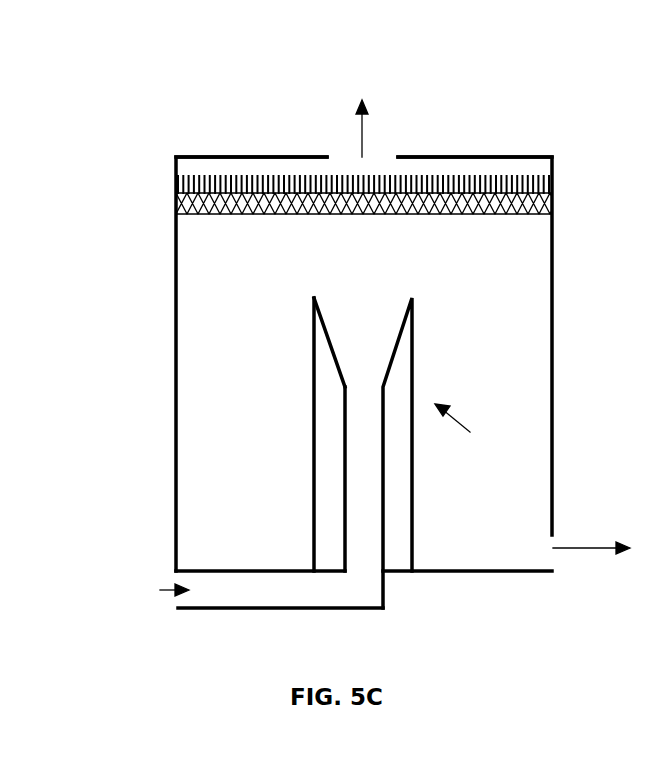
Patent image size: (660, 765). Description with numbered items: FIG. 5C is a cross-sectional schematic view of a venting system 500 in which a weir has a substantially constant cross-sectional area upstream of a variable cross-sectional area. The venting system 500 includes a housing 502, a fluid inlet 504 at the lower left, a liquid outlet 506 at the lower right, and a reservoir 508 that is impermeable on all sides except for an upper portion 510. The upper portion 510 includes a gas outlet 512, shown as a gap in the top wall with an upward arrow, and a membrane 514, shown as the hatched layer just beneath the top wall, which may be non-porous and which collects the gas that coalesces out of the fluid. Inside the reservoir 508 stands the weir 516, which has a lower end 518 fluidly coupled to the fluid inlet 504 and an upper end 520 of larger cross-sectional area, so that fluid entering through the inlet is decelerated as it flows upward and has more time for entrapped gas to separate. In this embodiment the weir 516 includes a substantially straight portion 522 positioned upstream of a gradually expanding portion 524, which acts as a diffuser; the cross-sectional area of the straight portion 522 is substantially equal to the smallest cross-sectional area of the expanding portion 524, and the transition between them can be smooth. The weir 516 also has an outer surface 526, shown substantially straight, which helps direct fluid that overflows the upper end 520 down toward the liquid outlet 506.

The venting system 500 is at (139, 100).
The housing 502 is at (175, 342).
The fluid inlet 504 is at (205, 597).
The liquid outlet 506 is at (555, 572).
The reservoir 508 is at (382, 286).
The upper portion 510 is at (432, 153).
The gas outlet 512 is at (347, 153).
The membrane 514 is at (553, 187).
The weir 516 is at (475, 433).
The lower end 518 is at (413, 570).
The upper end 520 is at (414, 302).
The substantially straight portion 522 is at (347, 517).
The gradually expanding portion 524 is at (327, 338).
The outer surface 526 is at (317, 455).